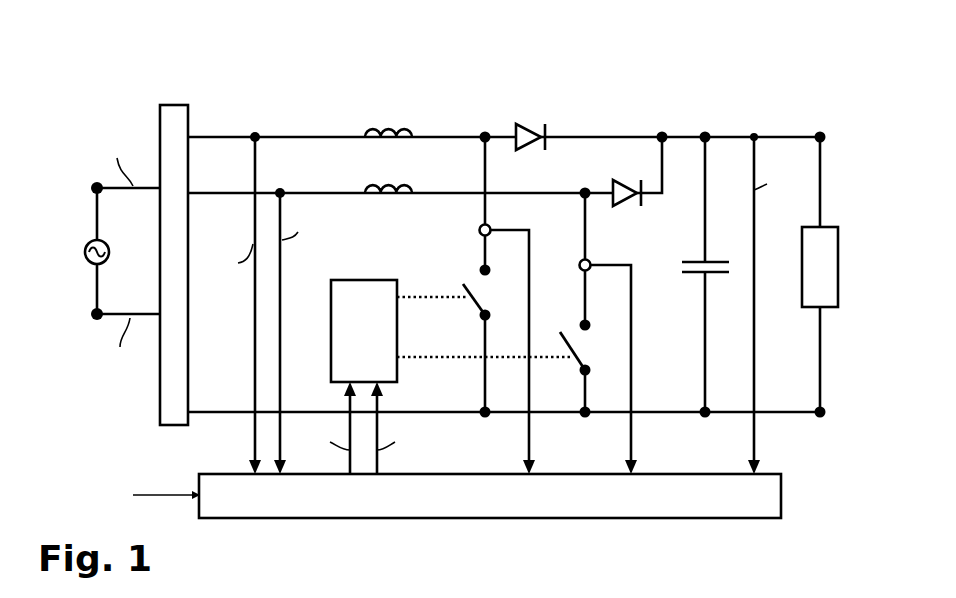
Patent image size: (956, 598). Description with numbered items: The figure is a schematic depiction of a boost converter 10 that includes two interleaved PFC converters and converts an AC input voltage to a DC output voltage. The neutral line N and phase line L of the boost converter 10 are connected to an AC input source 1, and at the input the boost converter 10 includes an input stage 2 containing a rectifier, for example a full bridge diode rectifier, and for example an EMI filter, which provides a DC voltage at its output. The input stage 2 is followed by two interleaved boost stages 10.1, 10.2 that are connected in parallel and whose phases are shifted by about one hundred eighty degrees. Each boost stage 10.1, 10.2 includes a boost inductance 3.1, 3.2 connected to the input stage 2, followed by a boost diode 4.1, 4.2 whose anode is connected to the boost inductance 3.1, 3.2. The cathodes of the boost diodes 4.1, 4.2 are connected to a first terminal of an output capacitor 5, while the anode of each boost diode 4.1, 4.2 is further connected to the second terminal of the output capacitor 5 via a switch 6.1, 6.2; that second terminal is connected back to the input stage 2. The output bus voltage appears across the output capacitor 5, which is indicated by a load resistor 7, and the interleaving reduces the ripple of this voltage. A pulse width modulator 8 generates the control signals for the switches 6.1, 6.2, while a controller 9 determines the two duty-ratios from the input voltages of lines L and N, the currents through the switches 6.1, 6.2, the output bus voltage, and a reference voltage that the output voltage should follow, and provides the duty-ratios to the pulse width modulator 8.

The AC input source 1 is at (93, 240).
The input stage 2 is at (176, 104).
The boost inductance 3.1 is at (388, 126).
The boost inductance 3.2 is at (405, 185).
The boost diode 4.1 is at (527, 124).
The boost diode 4.2 is at (626, 180).
The output capacitor 5 is at (681, 268).
The switch 6.1 is at (470, 282).
The switch 6.2 is at (572, 340).
The load resistor 7 is at (820, 267).
The pulse width modulator 8 is at (364, 331).
The controller 9 is at (490, 496).
The boost converter 10 is at (100, 58).
The boost stage 10.1 is at (336, 101).
The boost stage 10.2 is at (336, 160).